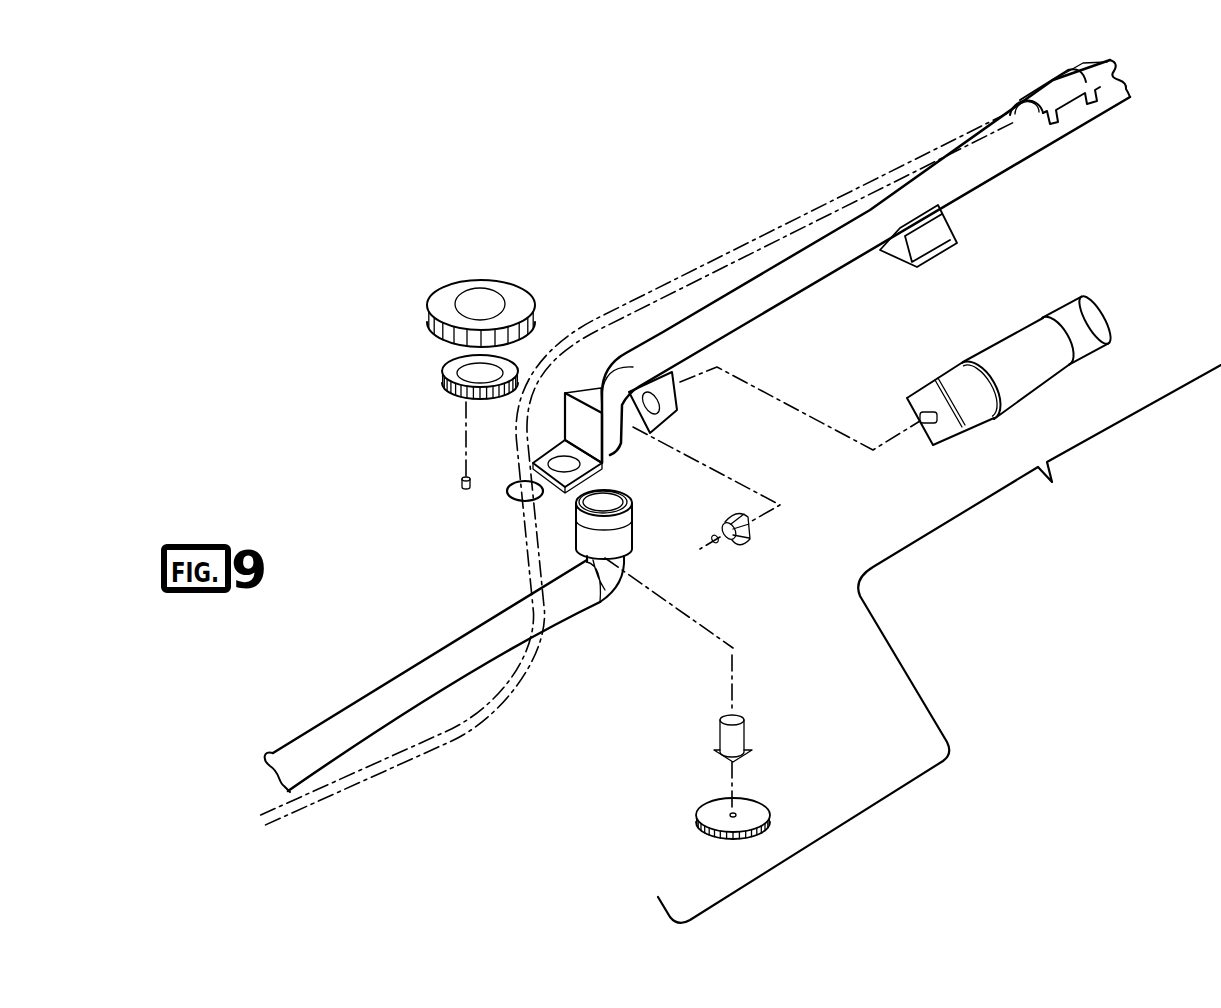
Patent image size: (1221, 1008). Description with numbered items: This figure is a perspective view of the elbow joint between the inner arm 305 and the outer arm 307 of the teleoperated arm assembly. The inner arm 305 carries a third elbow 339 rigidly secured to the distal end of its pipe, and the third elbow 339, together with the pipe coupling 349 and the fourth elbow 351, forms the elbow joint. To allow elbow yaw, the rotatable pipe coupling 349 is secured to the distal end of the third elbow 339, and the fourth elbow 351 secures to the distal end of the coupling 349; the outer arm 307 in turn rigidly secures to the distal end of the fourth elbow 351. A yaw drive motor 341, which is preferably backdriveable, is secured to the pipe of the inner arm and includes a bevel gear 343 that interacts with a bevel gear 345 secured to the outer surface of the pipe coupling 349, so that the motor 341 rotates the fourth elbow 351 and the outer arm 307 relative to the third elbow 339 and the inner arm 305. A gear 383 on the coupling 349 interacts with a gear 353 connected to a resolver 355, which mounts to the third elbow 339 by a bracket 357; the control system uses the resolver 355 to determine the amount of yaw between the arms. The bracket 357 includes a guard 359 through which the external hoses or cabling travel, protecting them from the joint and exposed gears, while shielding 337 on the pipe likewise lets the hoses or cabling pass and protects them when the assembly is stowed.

The inner arm 305 is at (766, 302).
The outer arm 307 is at (476, 643).
The shielding 337 is at (1062, 88).
The third elbow 339 is at (612, 456).
The yaw drive motor 341 is at (1000, 353).
The bevel gear 343 is at (737, 548).
The bevel gear 345 is at (427, 303).
The pipe coupling 349 is at (610, 534).
The fourth elbow 351 is at (613, 578).
The gear 353 is at (718, 809).
The resolver 355 is at (726, 741).
The bracket 357 is at (577, 418).
The guard 359 is at (506, 492).
The gear 383 is at (444, 378).